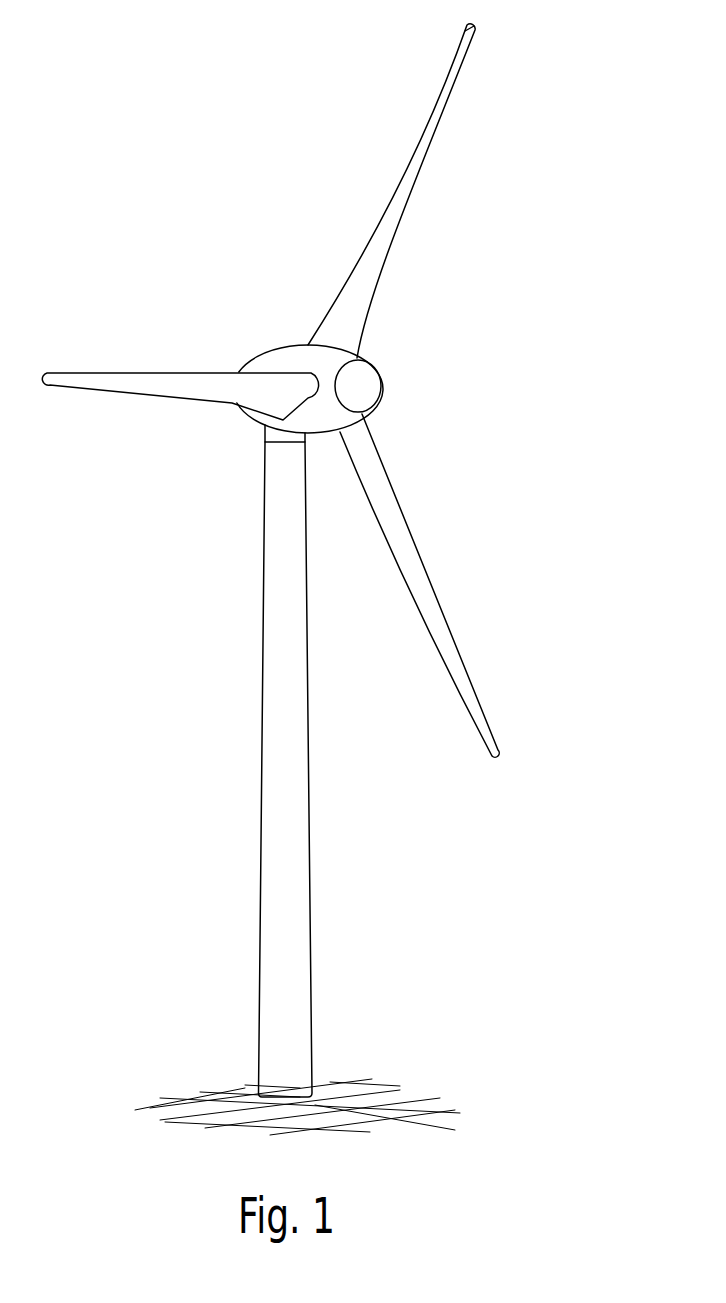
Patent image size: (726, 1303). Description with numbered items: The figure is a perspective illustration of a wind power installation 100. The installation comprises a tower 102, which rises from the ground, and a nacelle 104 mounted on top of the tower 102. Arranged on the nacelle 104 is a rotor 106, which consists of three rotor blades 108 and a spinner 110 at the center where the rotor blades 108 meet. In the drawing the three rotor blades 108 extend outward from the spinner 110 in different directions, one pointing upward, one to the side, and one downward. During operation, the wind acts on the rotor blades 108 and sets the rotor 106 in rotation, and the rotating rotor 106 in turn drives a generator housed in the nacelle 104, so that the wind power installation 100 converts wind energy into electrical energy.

The wind power installation 100 is at (220, 502).
The tower 102 is at (309, 853).
The nacelle 104 is at (265, 355).
The rotor 106 is at (510, 288).
The rotor blades 108 is at (400, 182).
The spinner 110 is at (366, 383).